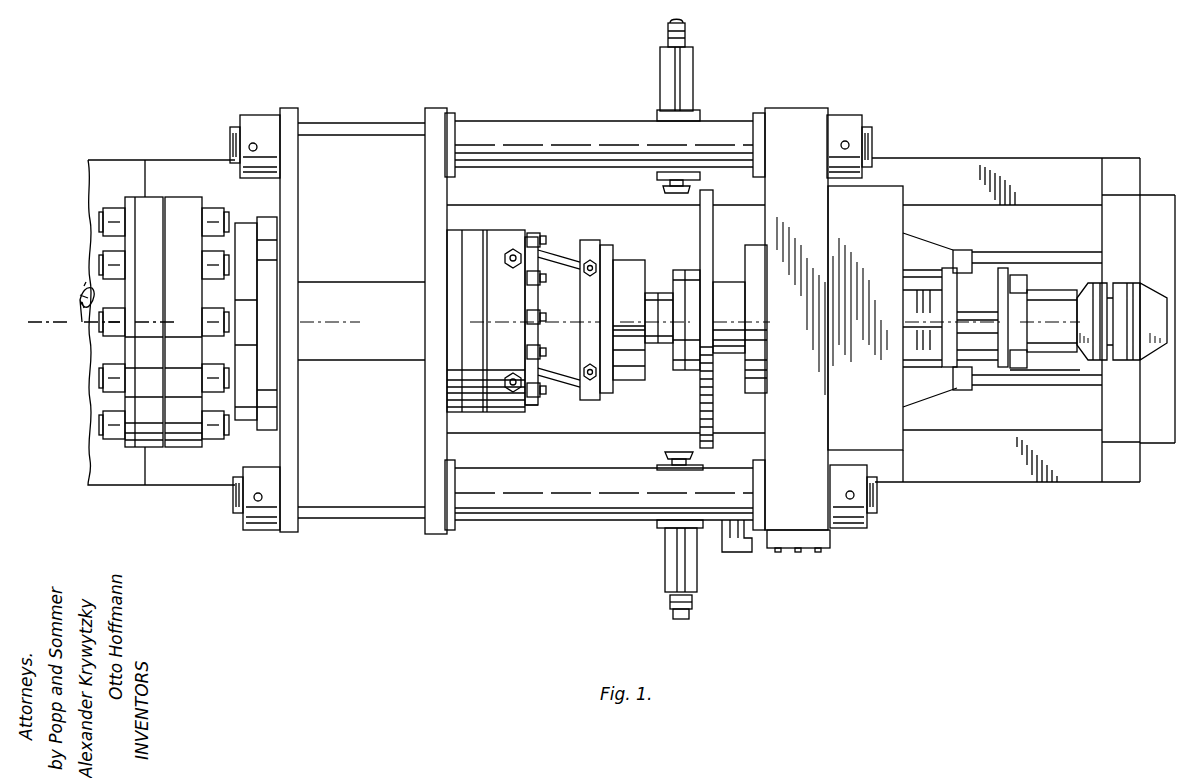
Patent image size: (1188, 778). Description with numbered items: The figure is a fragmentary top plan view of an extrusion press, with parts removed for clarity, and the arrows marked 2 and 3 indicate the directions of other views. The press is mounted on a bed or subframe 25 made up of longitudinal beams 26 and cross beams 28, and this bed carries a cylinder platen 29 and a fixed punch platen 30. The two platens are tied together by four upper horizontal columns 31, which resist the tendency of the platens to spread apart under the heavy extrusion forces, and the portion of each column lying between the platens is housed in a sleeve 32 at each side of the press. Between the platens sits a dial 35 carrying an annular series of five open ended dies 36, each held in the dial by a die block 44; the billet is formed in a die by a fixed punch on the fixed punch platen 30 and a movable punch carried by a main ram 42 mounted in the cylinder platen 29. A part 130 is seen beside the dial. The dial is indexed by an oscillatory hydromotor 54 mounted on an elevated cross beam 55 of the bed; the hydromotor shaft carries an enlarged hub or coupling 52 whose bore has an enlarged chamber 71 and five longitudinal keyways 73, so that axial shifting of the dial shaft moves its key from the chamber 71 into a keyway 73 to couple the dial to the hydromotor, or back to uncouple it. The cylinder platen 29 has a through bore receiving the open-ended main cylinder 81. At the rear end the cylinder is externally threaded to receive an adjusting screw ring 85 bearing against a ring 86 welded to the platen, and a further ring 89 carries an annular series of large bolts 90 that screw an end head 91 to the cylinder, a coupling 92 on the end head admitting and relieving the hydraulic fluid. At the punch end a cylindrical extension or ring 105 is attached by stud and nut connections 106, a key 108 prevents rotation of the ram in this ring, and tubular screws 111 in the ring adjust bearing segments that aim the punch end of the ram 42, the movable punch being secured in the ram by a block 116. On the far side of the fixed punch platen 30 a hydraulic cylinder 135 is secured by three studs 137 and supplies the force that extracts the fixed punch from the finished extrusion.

The section line 2 is at (1168, 320).
The section line 3 is at (52, 322).
The bed or subframe 25 is at (1062, 486).
The longitudinal beams 26 is at (1036, 158).
The cross beams 28 is at (1118, 160).
The cylinder platen 29 is at (356, 156).
The fixed punch platen 30 is at (812, 98).
The upper horizontal columns 31 is at (230, 140).
The sleeve 32 is at (578, 128).
The dial 35 is at (692, 236).
The open ended dies 36 is at (664, 352).
The main ram 42 is at (624, 386).
The die block 44 is at (686, 282).
The hub or coupling 52 is at (1062, 294).
The hydromotor 54 is at (1120, 296).
The elevated cross beam 55 is at (1118, 410).
The enlarged chamber 71 is at (470, 333).
The longitudinal keyways 73 is at (452, 253).
The main cylinder 81 is at (236, 298).
The adjusting screw ring 85 is at (270, 262).
The ring 86 is at (270, 232).
The ring 89 is at (182, 203).
The large bolts 90 is at (102, 226).
The end head 91 is at (136, 207).
The coupling 92 is at (82, 306).
The cylindrical extension or ring 105 is at (538, 252).
The stud and nut connections 106 is at (536, 352).
The key 108 is at (586, 250).
The tubular externally threaded screws 111 is at (580, 408).
The block 116 is at (610, 290).
The gear 130 is at (722, 282).
The hydraulic cylinder 135 is at (1038, 298).
The studs 137 is at (938, 310).